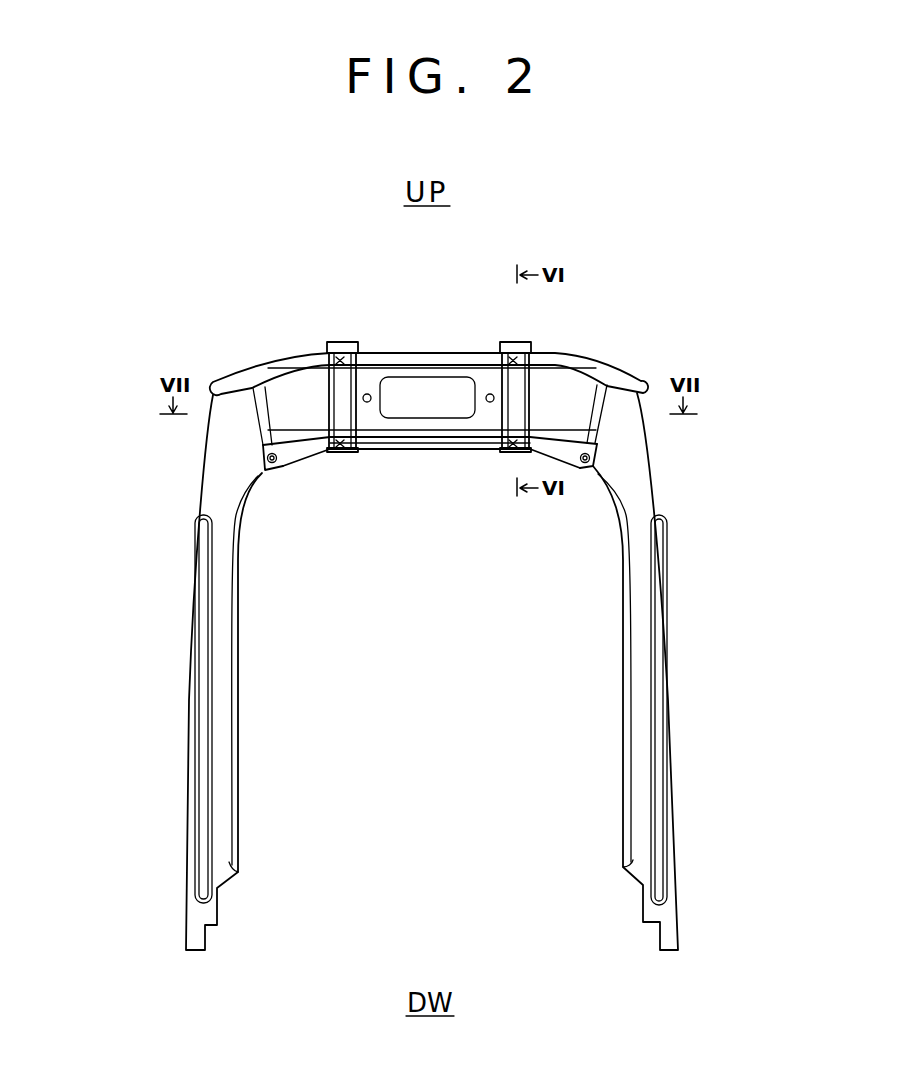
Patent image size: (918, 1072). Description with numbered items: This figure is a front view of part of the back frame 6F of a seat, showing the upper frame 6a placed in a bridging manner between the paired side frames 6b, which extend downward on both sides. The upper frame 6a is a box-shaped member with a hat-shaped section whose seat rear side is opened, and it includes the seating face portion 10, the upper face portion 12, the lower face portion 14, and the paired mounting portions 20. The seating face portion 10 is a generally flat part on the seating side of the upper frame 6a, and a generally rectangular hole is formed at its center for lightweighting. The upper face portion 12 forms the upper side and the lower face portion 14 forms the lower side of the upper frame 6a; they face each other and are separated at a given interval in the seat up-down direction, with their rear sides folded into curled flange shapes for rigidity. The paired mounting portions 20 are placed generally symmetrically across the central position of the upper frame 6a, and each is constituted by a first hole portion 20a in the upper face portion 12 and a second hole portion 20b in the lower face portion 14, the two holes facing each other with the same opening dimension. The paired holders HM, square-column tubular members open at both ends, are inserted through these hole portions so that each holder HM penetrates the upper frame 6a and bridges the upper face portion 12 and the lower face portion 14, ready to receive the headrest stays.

The back frame 6F is at (185, 630).
The upper frame 6a is at (683, 338).
The side frames 6b is at (673, 630).
The seating face portion 10 is at (550, 387).
The upper face portion 12 is at (602, 372).
The lower face portion 14 is at (563, 443).
The mounting portions 20 is at (192, 290).
The first hole portion 20a is at (333, 358).
The second hole portion 20b is at (333, 443).
The holders HM is at (343, 341).